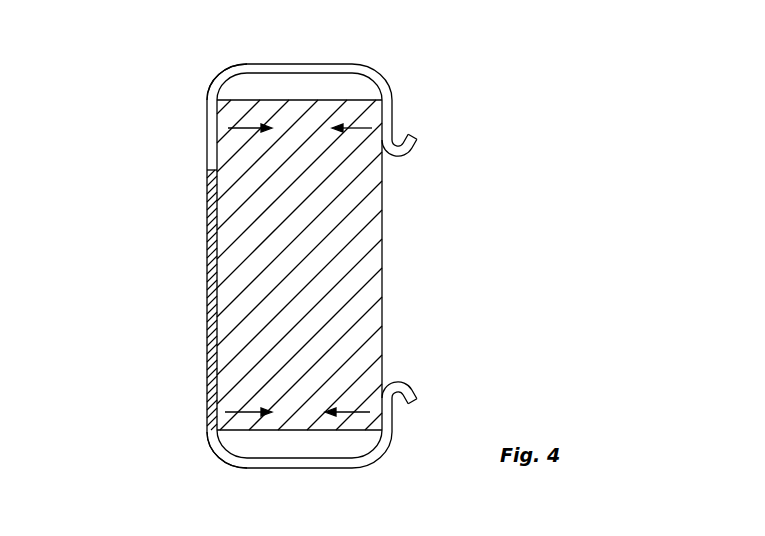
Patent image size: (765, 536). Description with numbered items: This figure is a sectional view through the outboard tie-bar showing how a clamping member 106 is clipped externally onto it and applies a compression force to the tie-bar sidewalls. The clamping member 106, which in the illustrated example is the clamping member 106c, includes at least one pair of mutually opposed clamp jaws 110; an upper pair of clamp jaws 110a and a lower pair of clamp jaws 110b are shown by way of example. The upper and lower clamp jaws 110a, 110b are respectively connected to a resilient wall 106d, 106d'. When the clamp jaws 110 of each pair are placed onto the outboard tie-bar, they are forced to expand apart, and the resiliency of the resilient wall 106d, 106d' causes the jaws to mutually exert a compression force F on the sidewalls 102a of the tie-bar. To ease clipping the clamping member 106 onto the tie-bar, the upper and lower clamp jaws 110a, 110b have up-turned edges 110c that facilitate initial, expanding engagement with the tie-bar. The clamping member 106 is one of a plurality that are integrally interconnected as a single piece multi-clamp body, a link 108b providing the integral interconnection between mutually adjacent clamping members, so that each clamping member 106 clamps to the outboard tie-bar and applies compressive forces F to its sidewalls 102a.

The sidewalls 102a is at (217, 248).
The clamping member 106 is at (296, 260).
The clamping member 106c is at (340, 64).
The resilient wall 106d is at (184, 65).
The resilient wall 106d' is at (197, 461).
The link 108b is at (207, 308).
The clamp jaws 110 is at (356, 257).
The upper pair of clamp jaws 110a is at (380, 115).
The lower pair of clamp jaws 110b is at (382, 424).
The up-turned edges 110c is at (394, 153).
The compression force F is at (245, 128).